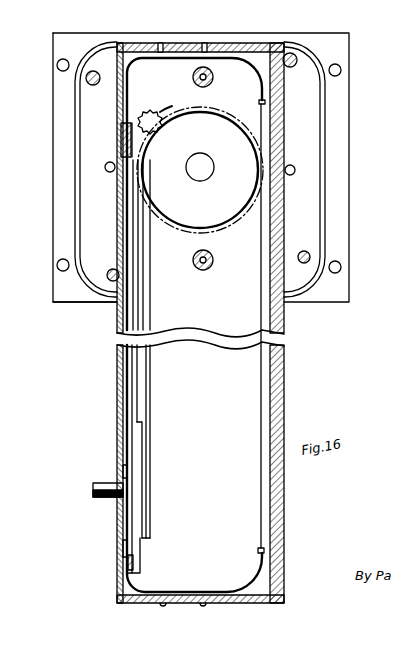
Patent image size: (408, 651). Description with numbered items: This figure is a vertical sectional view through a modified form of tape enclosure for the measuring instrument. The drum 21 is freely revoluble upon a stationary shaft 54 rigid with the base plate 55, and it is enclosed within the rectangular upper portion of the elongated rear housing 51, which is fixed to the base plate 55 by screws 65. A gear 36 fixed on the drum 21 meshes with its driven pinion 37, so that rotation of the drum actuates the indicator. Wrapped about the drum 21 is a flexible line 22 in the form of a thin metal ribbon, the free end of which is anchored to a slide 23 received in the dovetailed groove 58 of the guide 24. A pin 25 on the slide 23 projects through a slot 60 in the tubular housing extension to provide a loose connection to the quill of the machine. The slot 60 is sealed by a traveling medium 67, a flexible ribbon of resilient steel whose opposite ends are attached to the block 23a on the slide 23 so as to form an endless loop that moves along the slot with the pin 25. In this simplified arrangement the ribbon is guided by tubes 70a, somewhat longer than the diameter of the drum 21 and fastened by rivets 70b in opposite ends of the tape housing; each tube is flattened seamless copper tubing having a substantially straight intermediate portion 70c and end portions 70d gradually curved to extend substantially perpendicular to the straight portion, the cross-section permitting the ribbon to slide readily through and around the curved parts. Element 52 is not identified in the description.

The drum 21 is at (188, 219).
The flexible line 22 is at (150, 290).
The slide 23 is at (142, 450).
The block 23a is at (124, 511).
The guide 24 is at (124, 560).
The pin 25 is at (100, 490).
The gear 36 is at (170, 100).
The pinion 37 is at (151, 110).
The elongated housing 51 is at (286, 392).
The mounting plate 52 is at (55, 156).
The stationary shaft 54 is at (206, 176).
The base plate 55 is at (310, 122).
The elongated groove 58 is at (138, 377).
The slot 60 is at (128, 393).
The screws 65 is at (214, 77).
The traveling medium 67 is at (122, 453).
The tubes 70a is at (172, 60).
The rivets 70b is at (205, 43).
The straight intermediate portion 70c is at (210, 50).
The end portions 70d is at (122, 43).